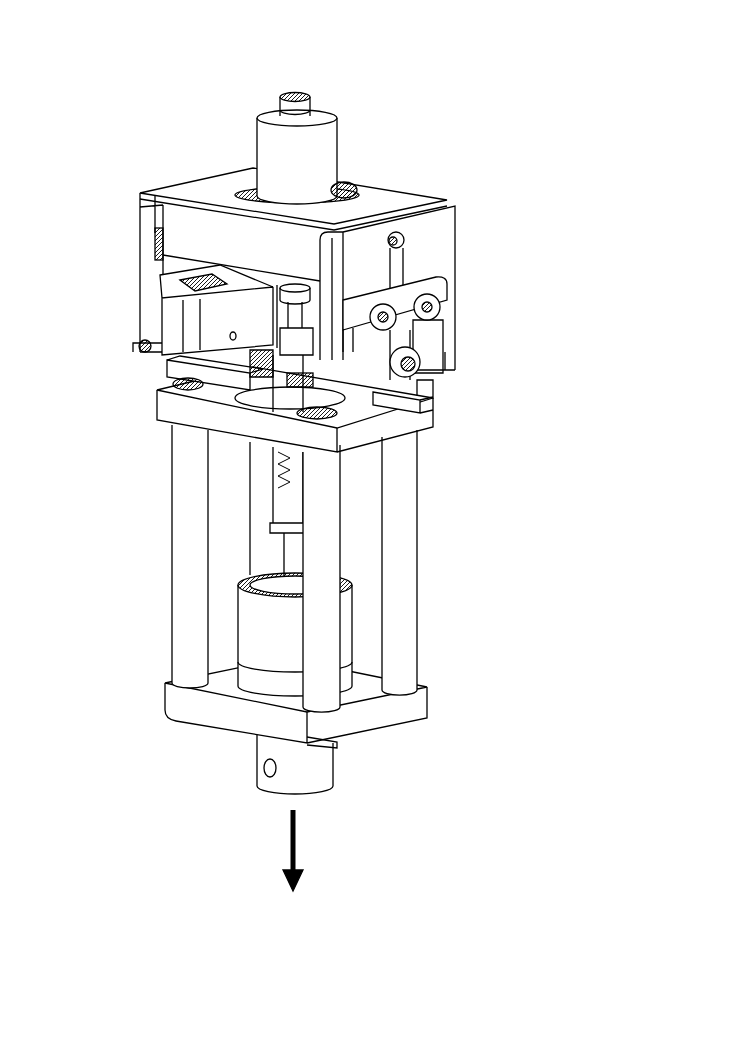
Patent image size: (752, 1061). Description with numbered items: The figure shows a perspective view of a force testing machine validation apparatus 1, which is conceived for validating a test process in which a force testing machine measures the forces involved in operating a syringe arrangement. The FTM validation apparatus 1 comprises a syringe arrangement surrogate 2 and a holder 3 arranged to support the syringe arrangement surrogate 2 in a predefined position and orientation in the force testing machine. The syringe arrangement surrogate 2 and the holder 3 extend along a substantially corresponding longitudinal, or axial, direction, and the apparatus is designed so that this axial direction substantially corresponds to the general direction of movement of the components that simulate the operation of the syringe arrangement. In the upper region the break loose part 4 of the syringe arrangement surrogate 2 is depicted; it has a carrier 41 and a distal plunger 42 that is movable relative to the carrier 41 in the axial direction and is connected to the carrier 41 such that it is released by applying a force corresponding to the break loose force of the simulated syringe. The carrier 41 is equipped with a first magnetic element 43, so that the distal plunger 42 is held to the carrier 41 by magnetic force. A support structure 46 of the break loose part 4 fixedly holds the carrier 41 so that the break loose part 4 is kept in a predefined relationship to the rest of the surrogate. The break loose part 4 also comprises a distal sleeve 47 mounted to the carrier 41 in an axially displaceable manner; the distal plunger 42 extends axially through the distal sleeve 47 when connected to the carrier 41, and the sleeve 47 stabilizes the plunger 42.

The force testing machine validation apparatus 1 is at (645, 150).
The syringe arrangement surrogate 2 is at (475, 145).
The holder 3 is at (444, 542).
The break loose part 4 is at (118, 252).
The carrier 41 is at (193, 227).
The distal plunger 42 is at (298, 106).
The first magnetic element 43 is at (330, 195).
The support structure 46 is at (150, 217).
The distal sleeve 47 is at (270, 170).